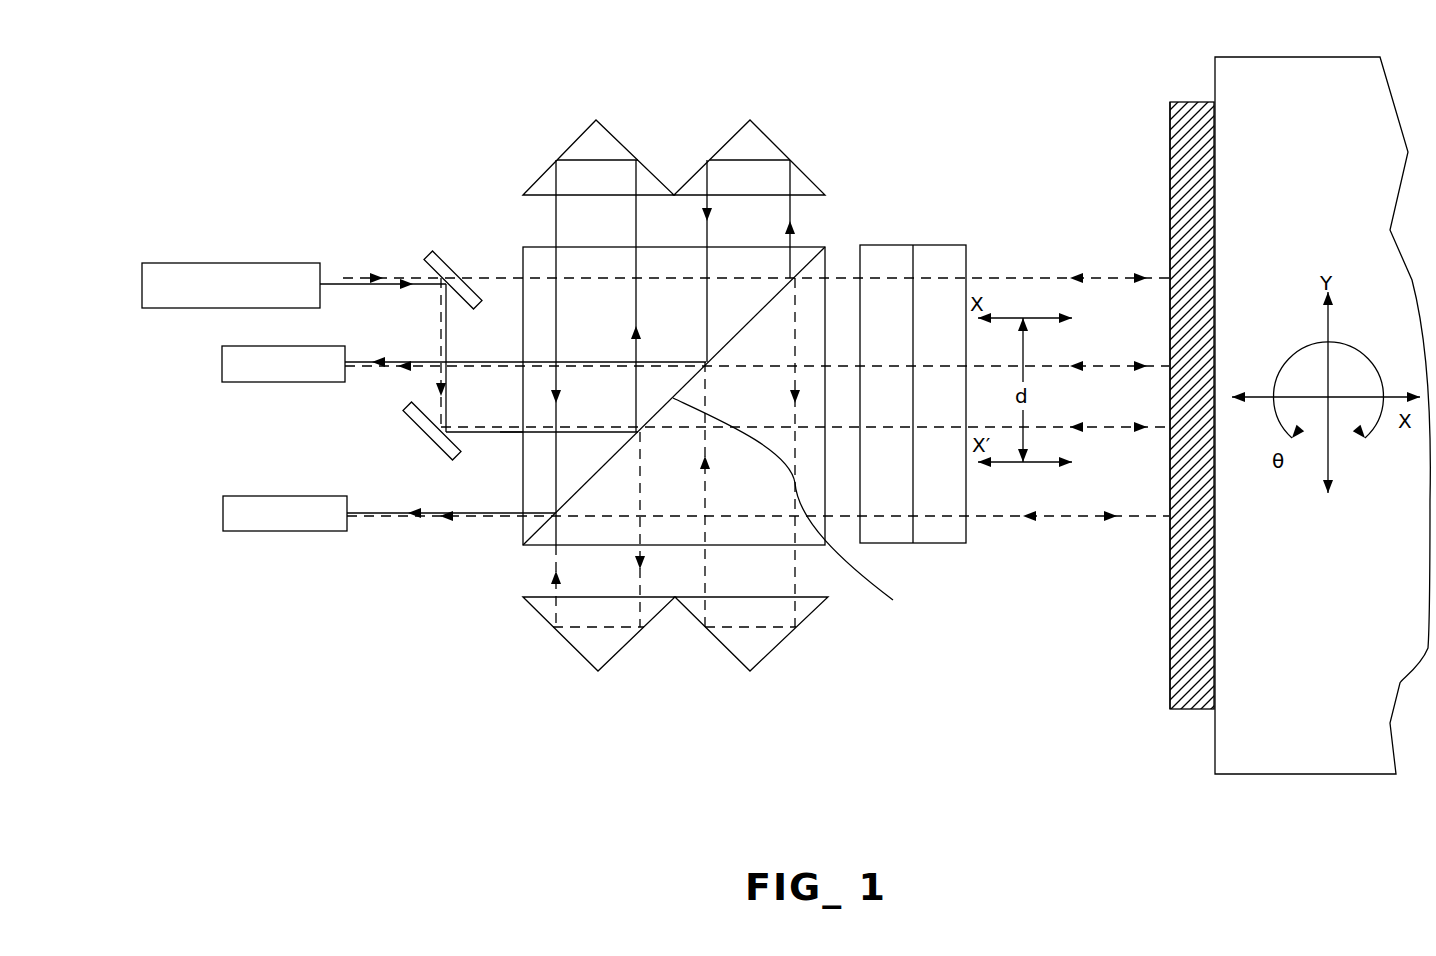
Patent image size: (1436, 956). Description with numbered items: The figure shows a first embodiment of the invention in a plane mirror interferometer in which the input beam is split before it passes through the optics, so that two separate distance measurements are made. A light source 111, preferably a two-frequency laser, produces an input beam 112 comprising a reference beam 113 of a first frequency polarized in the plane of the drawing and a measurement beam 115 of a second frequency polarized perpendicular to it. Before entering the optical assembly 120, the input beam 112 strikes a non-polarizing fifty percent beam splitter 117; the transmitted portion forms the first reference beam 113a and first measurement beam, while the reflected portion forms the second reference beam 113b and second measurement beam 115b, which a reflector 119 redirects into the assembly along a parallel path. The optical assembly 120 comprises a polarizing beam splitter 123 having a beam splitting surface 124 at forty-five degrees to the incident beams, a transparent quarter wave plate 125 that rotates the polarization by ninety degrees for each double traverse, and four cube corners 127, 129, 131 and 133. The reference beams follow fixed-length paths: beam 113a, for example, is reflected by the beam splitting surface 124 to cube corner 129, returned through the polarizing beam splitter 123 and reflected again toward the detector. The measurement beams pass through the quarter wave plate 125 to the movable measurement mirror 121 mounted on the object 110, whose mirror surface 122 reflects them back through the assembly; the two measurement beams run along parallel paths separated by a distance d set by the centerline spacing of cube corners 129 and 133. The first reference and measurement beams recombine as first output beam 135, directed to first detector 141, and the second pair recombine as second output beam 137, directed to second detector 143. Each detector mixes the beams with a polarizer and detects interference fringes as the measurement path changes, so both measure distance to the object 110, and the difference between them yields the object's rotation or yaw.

The object 110 is at (1330, 154).
The light source 111 is at (215, 278).
The input beam 112 is at (330, 292).
The reference beam 113 is at (387, 287).
The first reference beam 113a is at (500, 277).
The second reference beam 113b is at (497, 437).
The measurement beam 115 is at (393, 277).
The second measurement beam 115b is at (473, 433).
The non-polarizing 50% beam splitter 117 is at (416, 248).
The reflector 119 is at (421, 419).
The optical assembly 120 is at (742, 383).
The measurement mirror 121 is at (1193, 102).
The mirror surface 122 is at (1166, 214).
The polarizing beam splitter 123 is at (807, 506).
The beam splitting surface 124 is at (800, 277).
The quarter wave plate 125 is at (915, 243).
The cube corner 127 is at (702, 150).
The cube corner 129 is at (718, 647).
The cube corner 131 is at (628, 146).
The cube corner 133 is at (640, 634).
The first output beam 135 is at (365, 370).
The second output beam 137 is at (380, 518).
The first detector 141 is at (225, 365).
The second detector 143 is at (242, 520).